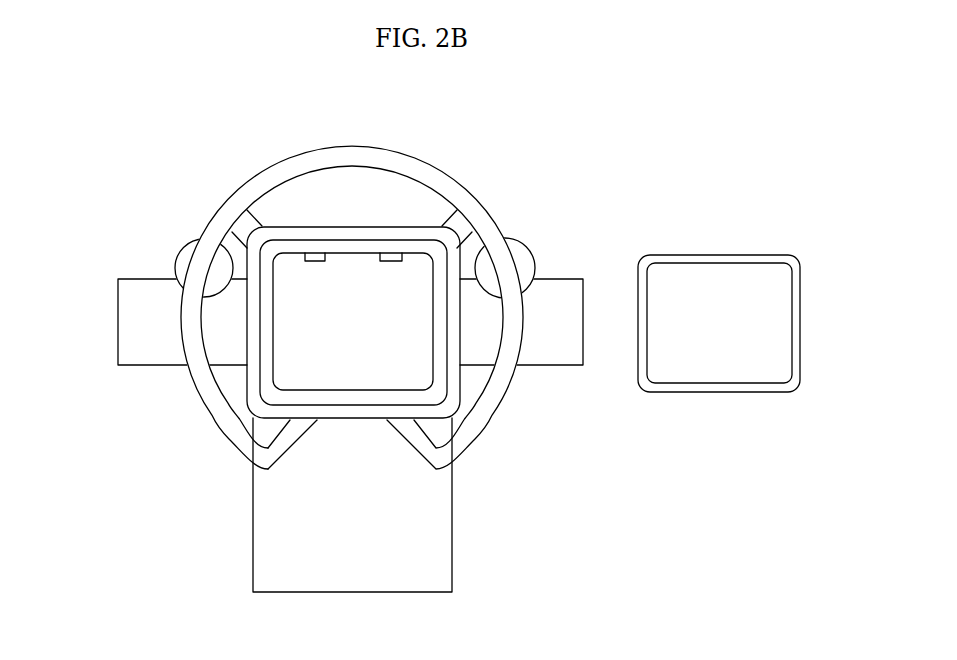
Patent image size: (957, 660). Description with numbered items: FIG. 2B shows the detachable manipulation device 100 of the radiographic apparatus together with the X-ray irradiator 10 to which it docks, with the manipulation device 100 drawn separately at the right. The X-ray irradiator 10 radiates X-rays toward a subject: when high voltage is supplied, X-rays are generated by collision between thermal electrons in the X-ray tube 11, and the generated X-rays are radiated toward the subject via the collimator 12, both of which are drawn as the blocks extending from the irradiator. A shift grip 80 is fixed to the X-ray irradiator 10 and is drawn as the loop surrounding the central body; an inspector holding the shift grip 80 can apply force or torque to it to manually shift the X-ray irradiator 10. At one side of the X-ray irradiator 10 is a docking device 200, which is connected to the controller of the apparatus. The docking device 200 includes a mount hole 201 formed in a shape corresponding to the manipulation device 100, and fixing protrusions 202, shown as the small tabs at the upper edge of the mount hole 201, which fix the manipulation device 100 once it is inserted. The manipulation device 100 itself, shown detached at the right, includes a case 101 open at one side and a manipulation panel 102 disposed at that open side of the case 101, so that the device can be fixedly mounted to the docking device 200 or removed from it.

The X-ray irradiator 10 is at (300, 205).
The X-ray tube 11 is at (122, 324).
The collimator 12 is at (448, 551).
The shift grip 80 is at (425, 172).
The manipulation device 100 is at (744, 326).
The case 101 is at (686, 390).
The manipulation panel 102 is at (742, 353).
The docking device 200 is at (317, 400).
The mount hole 201 is at (358, 353).
The fixing protrusions 202 is at (318, 256).